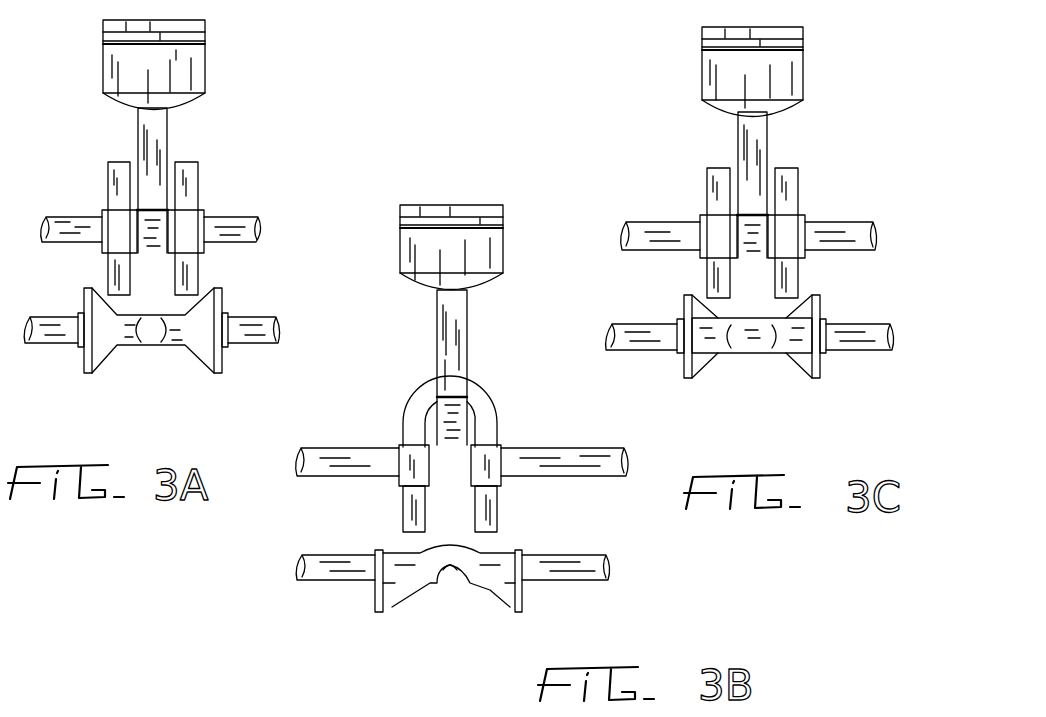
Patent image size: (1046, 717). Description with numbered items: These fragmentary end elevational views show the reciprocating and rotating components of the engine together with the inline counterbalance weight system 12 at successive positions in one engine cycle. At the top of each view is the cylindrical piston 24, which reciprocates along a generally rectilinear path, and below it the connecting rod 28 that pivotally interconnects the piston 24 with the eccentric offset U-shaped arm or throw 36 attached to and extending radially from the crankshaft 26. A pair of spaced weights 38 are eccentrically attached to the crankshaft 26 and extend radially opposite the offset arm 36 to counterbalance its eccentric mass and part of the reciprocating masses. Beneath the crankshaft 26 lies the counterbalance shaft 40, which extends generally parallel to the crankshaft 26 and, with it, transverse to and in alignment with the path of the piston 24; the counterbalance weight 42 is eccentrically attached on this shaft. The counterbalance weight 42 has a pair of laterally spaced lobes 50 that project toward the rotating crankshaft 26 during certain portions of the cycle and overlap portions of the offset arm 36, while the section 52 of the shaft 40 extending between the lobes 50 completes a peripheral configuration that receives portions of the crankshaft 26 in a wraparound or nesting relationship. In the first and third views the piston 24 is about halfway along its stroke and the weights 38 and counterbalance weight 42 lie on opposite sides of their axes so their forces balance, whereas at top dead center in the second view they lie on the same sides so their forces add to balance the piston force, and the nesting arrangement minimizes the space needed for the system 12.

In FIG. 3A, the inline counterbalance weight system 12 is at (170, 337).
In FIG. 3B, the inline counterbalance weight system 12 is at (400, 616).
In FIG. 3C, the inline counterbalance weight system 12 is at (724, 364).
In FIG. 3A, the piston 24 is at (198, 77).
In FIG. 3B, the piston 24 is at (487, 252).
In FIG. 3C, the piston 24 is at (797, 67).
In FIG. 3A, the crankshaft 26 is at (243, 220).
In FIG. 3B, the crankshaft 26 is at (350, 453).
In FIG. 3C, the crankshaft 26 is at (850, 228).
In FIG. 3A, the connecting rod 28 is at (158, 138).
In FIG. 3B, the connecting rod 28 is at (455, 334).
In FIG. 3C, the connecting rod 28 is at (762, 135).
In FIG. 3A, the offset U-shaped arm or throw 36 is at (118, 236).
In FIG. 3B, the offset U-shaped arm or throw 36 is at (480, 405).
In FIG. 3C, the offset U-shaped arm or throw 36 is at (753, 240).
In FIG. 3A, the spaced weights 38 is at (109, 180).
In FIG. 3B, the spaced weights 38 is at (408, 520).
In FIG. 3C, the spaced weights 38 is at (708, 173).
In FIG. 3A, the counterbalance shaft 40 is at (250, 335).
In FIG. 3B, the counterbalance shaft 40 is at (548, 575).
In FIG. 3C, the counterbalance shaft 40 is at (855, 333).
In FIG. 3A, the counterbalance weight 42 is at (80, 378).
In FIG. 3B, the counterbalance weight 42 is at (418, 608).
In FIG. 3C, the counterbalance weight 42 is at (788, 368).
In FIG. 3A, the lobes 50 is at (215, 372).
In FIG. 3B, the lobes 50 is at (512, 606).
In FIG. 3C, the lobes 50 is at (816, 376).
In FIG. 3A, the section of the shaft 52 is at (157, 335).
In FIG. 3B, the section of the shaft 52 is at (453, 568).
In FIG. 3C, the section of the shaft 52 is at (752, 343).